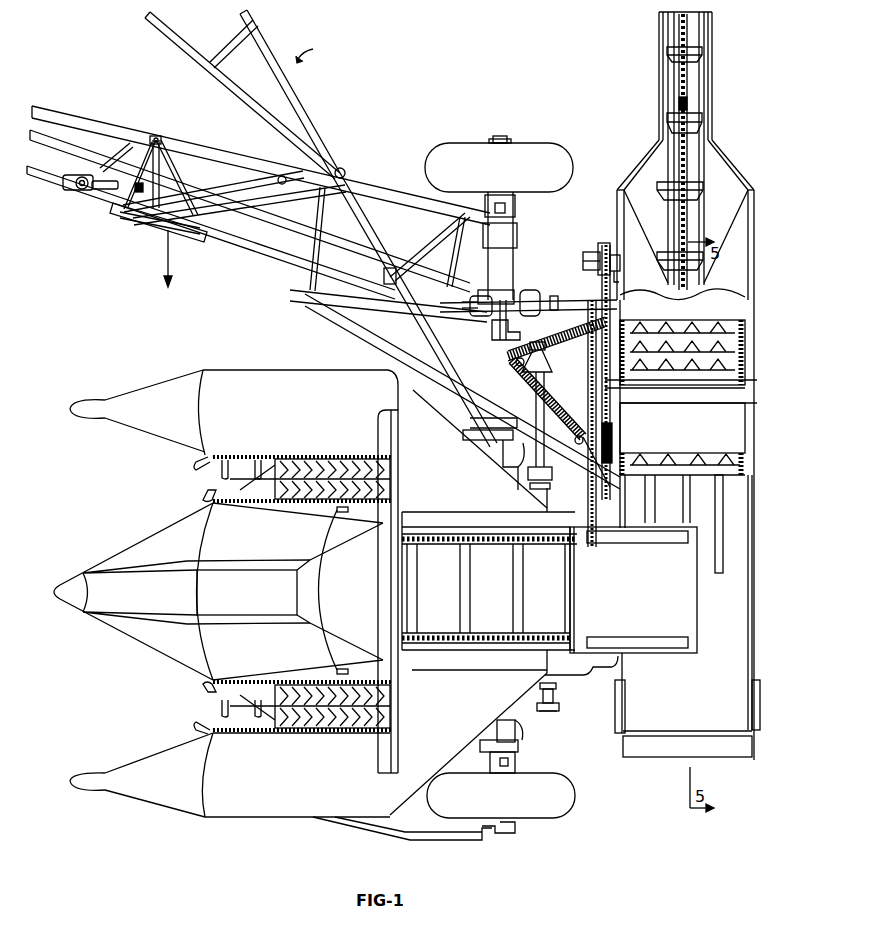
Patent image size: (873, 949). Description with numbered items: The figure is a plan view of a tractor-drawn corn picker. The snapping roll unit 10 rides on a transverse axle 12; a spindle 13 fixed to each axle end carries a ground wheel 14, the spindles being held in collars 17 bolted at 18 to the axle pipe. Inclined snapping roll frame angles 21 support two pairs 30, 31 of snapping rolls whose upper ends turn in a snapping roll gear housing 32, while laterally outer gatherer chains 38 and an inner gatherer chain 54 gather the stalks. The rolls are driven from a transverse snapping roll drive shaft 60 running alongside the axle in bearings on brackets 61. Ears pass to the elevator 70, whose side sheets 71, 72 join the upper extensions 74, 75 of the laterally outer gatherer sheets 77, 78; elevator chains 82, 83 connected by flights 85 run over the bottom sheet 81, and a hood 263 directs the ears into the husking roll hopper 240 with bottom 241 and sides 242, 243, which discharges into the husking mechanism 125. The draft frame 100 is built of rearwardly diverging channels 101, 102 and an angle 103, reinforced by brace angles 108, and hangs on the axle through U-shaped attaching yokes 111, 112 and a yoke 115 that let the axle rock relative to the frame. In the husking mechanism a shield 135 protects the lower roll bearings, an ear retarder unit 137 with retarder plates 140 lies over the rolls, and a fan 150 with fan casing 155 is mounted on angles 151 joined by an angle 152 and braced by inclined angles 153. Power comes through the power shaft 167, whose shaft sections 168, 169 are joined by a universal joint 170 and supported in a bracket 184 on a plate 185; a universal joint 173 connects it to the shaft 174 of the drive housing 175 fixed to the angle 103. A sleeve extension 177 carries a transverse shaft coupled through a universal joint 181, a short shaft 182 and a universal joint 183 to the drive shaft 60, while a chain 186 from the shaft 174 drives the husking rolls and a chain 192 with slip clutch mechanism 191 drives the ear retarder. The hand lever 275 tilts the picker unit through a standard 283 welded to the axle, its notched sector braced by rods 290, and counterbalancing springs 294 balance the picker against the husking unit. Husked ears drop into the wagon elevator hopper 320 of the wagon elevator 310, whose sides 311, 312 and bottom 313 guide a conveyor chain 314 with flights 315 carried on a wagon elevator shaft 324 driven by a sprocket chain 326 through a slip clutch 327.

The snapping roll unit 10 is at (280, 597).
The transverse axle 12 is at (496, 483).
The spindle 13 is at (496, 134).
The ground wheel 14 is at (518, 158).
The collar 17 is at (508, 207).
The bolt 18 is at (513, 763).
The snapping roll frame angle 21 is at (476, 441).
The pair of snapping rolls 30 is at (304, 457).
The pair of snapping rolls 31 is at (290, 685).
The snapping roll gear housing 32 is at (498, 452).
The laterally outer gatherer chain 38 is at (205, 463).
The inner gatherer chain 54 is at (204, 497).
The snapping roll drive shaft 60 is at (558, 714).
The bracket 61 is at (557, 689).
The elevator 70 is at (477, 602).
The side sheet 71 is at (502, 649).
The side sheet 72 is at (500, 549).
The upper extension 74 is at (470, 681).
The upper extension 75 is at (472, 505).
The laterally outer gatherer sheet 77 is at (290, 810).
The laterally outer gatherer sheet 78 is at (252, 375).
The bottom sheet 81 is at (500, 543).
The elevator chain 82 is at (552, 649).
The elevator chain 83 is at (556, 543).
The flight 85 is at (458, 573).
The draft frame 100 is at (372, 173).
The channel 101 is at (207, 244).
The channel 102 is at (178, 152).
The angle 103 is at (362, 310).
The brace angle 108 is at (163, 138).
The attaching yoke 111 is at (500, 233).
The attaching yoke 112 is at (490, 422).
The yoke 115 is at (480, 297).
The husking mechanism 125 is at (690, 396).
The shield 135 is at (735, 298).
The ear retarder unit 137 is at (732, 336).
The retarder plate 140 is at (732, 362).
The fan 150 is at (740, 438).
The angle 151 is at (750, 440).
The angle 152 is at (728, 404).
The angle 153 is at (752, 390).
The fan casing 155 is at (682, 428).
The power shaft 167 is at (53, 165).
The shaft section 168 is at (70, 183).
The shaft section 169 is at (356, 270).
The universal joint 170 is at (80, 192).
The universal joint 173 is at (470, 297).
The shaft 174 is at (498, 299).
The drive housing 175 is at (546, 297).
The sleeve extension 177 is at (538, 329).
The universal joint 181 is at (546, 352).
The short shaft 182 is at (548, 386).
The universal joint 183 is at (557, 431).
The bracket 184 is at (137, 215).
The plate 185 is at (145, 169).
The chain 186 is at (675, 396).
The slip clutch mechanism 191 is at (614, 433).
The chain 192 is at (614, 418).
The husking roll hopper 240 is at (673, 616).
The hopper bottom 241 is at (732, 637).
The hopper side 242 is at (628, 672).
The hopper side 243 is at (752, 592).
The hood 263 is at (633, 590).
The hand lever 275 is at (112, 208).
The standard 283 is at (528, 320).
The rod 290 is at (188, 208).
The counterbalancing spring 294 is at (578, 401).
The wagon elevator 310 is at (660, 40).
The side 311 is at (666, 80).
The side 312 is at (704, 64).
The bottom 313 is at (692, 86).
The conveyor chain 314 is at (687, 101).
The flight 315 is at (693, 134).
The wagon elevator hopper 320 is at (737, 218).
The wagon elevator shaft 324 is at (612, 275).
The sprocket chain 326 is at (584, 262).
The slip clutch 327 is at (600, 242).